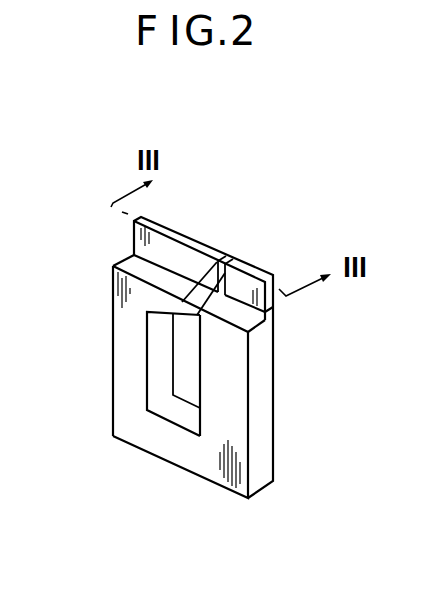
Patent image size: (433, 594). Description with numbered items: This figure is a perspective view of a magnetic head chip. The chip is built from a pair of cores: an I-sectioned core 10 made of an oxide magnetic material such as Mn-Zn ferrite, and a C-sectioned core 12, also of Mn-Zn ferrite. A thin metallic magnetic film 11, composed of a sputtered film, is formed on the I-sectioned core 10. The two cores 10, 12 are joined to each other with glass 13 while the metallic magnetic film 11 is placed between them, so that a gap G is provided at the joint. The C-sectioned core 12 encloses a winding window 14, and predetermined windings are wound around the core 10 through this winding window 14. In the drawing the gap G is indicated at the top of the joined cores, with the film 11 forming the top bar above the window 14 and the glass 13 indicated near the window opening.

The I-sectioned core 10 is at (263, 363).
The thin metallic magnetic film 11 is at (222, 270).
The C-sectioned core 12 is at (123, 340).
The glass 13 is at (168, 307).
The winding window 14 is at (193, 372).
The gap G is at (233, 252).